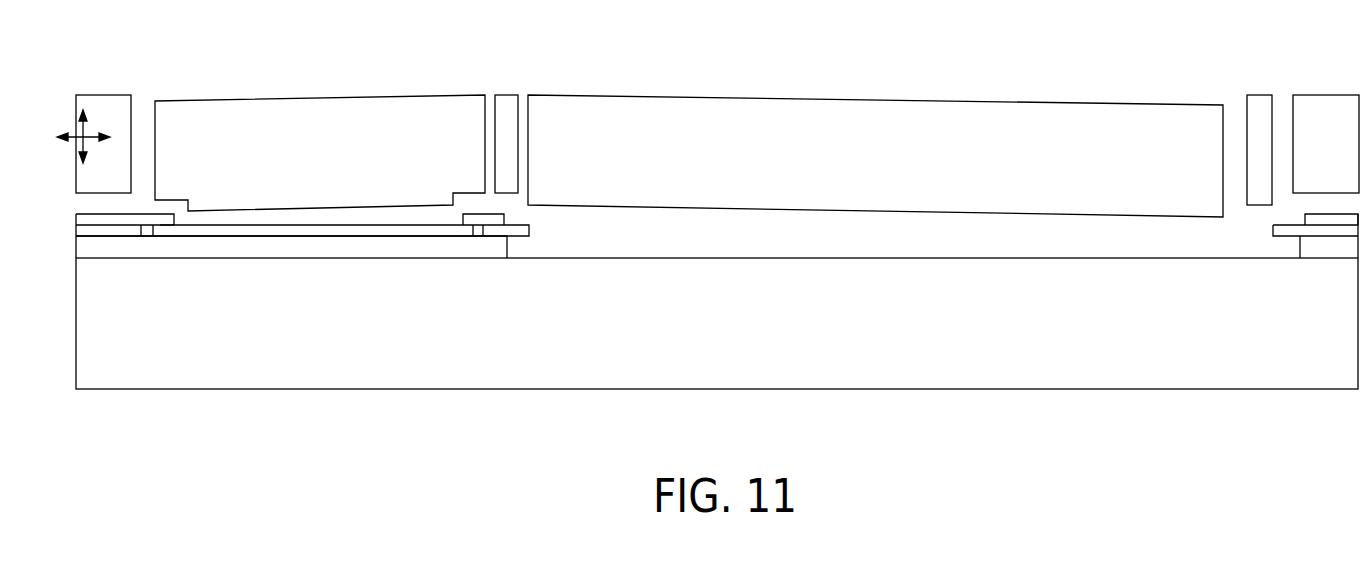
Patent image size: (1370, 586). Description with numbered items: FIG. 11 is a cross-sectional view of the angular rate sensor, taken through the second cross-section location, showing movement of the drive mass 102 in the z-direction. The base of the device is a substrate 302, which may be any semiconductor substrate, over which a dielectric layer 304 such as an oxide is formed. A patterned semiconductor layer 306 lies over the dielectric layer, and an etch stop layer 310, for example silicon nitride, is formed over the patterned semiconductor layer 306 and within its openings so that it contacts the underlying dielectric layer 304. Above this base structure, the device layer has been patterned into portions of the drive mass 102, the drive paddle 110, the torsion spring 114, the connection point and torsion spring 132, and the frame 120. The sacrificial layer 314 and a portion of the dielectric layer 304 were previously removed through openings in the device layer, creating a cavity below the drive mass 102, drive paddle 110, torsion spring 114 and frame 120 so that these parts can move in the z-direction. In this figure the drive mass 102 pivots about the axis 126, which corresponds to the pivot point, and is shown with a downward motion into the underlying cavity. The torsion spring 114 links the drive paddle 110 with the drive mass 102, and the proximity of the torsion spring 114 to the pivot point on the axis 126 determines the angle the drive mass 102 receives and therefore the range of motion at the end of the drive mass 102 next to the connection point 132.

The drive mass 102 is at (105, 107).
The drive paddle 110 is at (347, 155).
The torsion spring 114 is at (507, 107).
The frame 120 is at (1319, 107).
The axis 126 is at (76, 135).
The connection point and torsion spring 132 is at (1260, 107).
The substrate 302 is at (708, 349).
The dielectric layer 304 is at (388, 248).
The patterned semiconductor layer 306 is at (100, 228).
The etch stop layer 310 is at (135, 220).
The sacrificial layer 314 is at (164, 205).